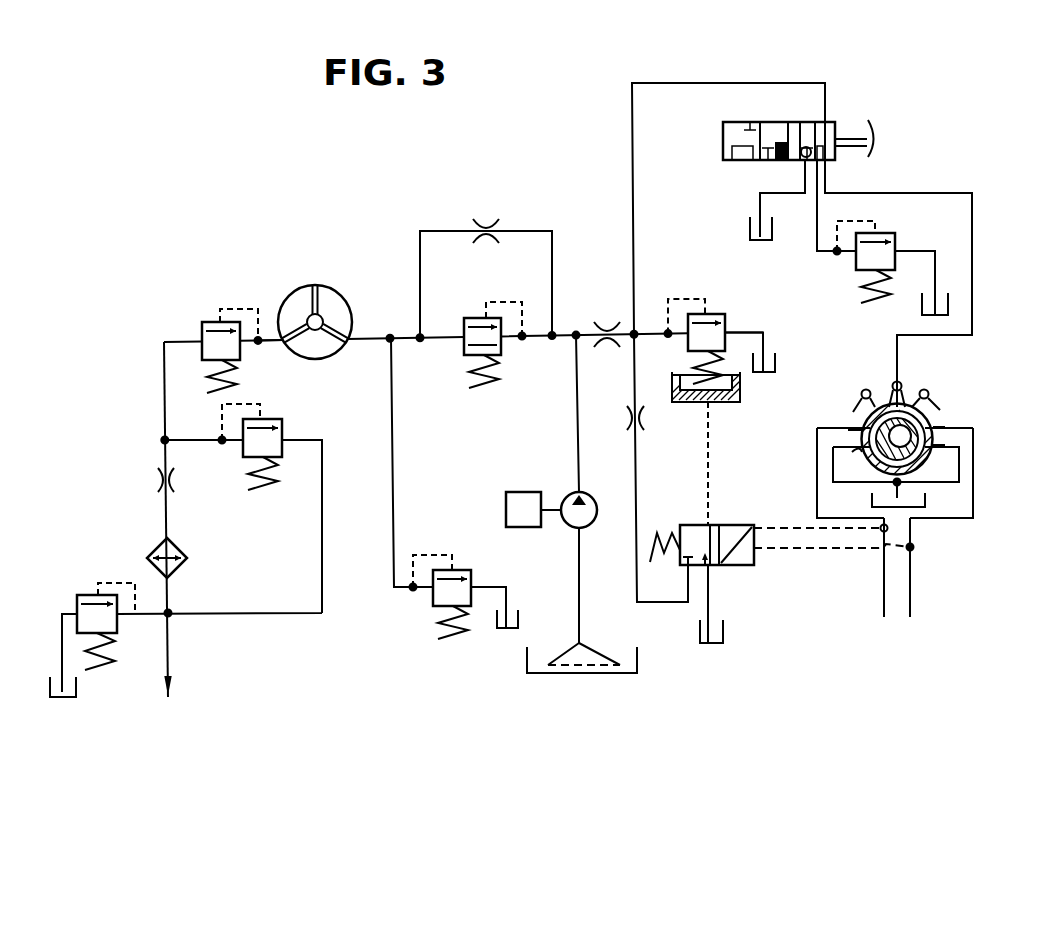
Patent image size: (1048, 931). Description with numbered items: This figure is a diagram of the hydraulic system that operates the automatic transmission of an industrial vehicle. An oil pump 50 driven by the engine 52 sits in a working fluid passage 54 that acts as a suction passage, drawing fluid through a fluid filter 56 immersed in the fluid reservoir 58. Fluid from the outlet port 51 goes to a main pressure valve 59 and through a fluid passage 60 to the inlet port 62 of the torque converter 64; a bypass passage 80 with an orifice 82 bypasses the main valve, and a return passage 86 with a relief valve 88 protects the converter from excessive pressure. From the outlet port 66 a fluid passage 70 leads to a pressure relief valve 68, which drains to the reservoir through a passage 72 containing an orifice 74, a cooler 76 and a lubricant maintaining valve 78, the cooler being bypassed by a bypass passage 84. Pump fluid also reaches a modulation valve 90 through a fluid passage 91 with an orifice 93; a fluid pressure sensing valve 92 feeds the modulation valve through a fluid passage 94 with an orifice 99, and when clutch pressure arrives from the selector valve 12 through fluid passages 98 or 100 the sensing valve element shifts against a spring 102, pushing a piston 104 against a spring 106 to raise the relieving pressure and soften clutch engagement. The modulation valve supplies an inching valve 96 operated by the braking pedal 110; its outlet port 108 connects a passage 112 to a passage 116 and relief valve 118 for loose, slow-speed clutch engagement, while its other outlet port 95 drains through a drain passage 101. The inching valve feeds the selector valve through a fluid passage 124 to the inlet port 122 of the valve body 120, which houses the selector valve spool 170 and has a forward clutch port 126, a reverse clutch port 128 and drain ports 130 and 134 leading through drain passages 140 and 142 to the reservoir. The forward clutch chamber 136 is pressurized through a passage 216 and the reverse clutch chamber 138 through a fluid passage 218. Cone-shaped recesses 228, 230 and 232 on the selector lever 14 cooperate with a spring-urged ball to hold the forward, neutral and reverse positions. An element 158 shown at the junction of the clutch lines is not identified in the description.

The selector valve 12 is at (955, 406).
The selector lever 14 is at (861, 393).
The oil pump 50 is at (592, 515).
The outlet port 51 is at (583, 498).
The engine 52 is at (510, 530).
The working fluid passage 54 is at (577, 421).
The fluid filter 56 is at (588, 652).
The fluid reservoir 58 is at (78, 692).
The main pressure valve 59 is at (473, 343).
The fluid passage 60 is at (440, 329).
The inlet port 62 is at (336, 338).
The torque converter 64 is at (330, 289).
The outlet port 66 is at (298, 339).
The pressure relief valve 68 is at (205, 322).
The fluid passage 70 is at (270, 338).
The passage 72 is at (163, 416).
The orifice 74 is at (175, 480).
The cooler 76 is at (184, 552).
The lubricant maintaining valve 78 is at (90, 595).
The bypass passage 80 is at (531, 228).
The orifice 82 is at (485, 222).
The bypass passage 84 is at (312, 439).
The return passage 86 is at (398, 478).
The relief valve 88 is at (455, 570).
The modulation valve 90 is at (716, 314).
The fluid passage 91 is at (649, 325).
The fluid pressure sensing valve 92 is at (732, 525).
The orifice 93 is at (607, 326).
The fluid passage 94 is at (640, 470).
The outlet port 95 is at (807, 156).
The inching valve 96 is at (827, 123).
The fluid passage 98 is at (790, 528).
The orifice 99 is at (645, 430).
The fluid passage 100 is at (769, 550).
The drain passage 101 is at (774, 196).
The spring 102 is at (660, 536).
The piston 104 is at (741, 394).
The spring 106 is at (722, 367).
The outlet port 108 is at (831, 156).
The braking pedal 110 is at (870, 123).
The passage 112 is at (742, 82).
The passage 116 is at (818, 208).
The relief valve 118 is at (890, 236).
The valve body 120 is at (952, 465).
The inlet port 122 is at (922, 394).
The fluid passage 124 is at (972, 238).
The forward clutch port 126 is at (942, 425).
The reverse clutch port 128 is at (859, 426).
The drain port 130 is at (940, 454).
The drain port 134 is at (850, 452).
The forward clutch chamber 136 is at (921, 622).
The reverse clutch chamber 138 is at (881, 622).
The drain passage 140 is at (940, 490).
The drain passage 142 is at (855, 483).
The junction 158 is at (912, 547).
The selector valve spool 170 is at (918, 440).
The passage 216 is at (912, 598).
The fluid passage 218 is at (882, 590).
The cone-shaped recess 228 is at (928, 394).
The cone-shaped recess 230 is at (900, 383).
The cone-shaped recess 232 is at (868, 390).